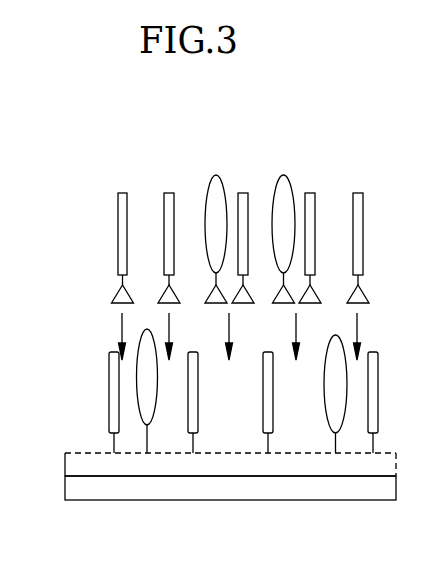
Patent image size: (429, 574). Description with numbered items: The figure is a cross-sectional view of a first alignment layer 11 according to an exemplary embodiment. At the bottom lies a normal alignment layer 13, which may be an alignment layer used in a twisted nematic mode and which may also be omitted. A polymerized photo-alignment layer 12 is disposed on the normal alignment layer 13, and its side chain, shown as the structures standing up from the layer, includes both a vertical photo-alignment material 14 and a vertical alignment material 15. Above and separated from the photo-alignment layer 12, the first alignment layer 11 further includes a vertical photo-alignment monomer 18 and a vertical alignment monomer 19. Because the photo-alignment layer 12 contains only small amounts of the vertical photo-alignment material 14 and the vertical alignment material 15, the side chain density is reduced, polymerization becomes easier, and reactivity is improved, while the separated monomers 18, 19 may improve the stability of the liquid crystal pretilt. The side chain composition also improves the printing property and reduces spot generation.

The first alignment layer 11 is at (214, 510).
The photo-alignment layer 12 is at (67, 465).
The normal alignment layer 13 is at (67, 490).
The vertical photo-alignment material 14 is at (113, 370).
The vertical alignment material 15 is at (145, 395).
The vertical photo-alignment monomer 18 is at (173, 200).
The vertical alignment monomer 19 is at (285, 187).